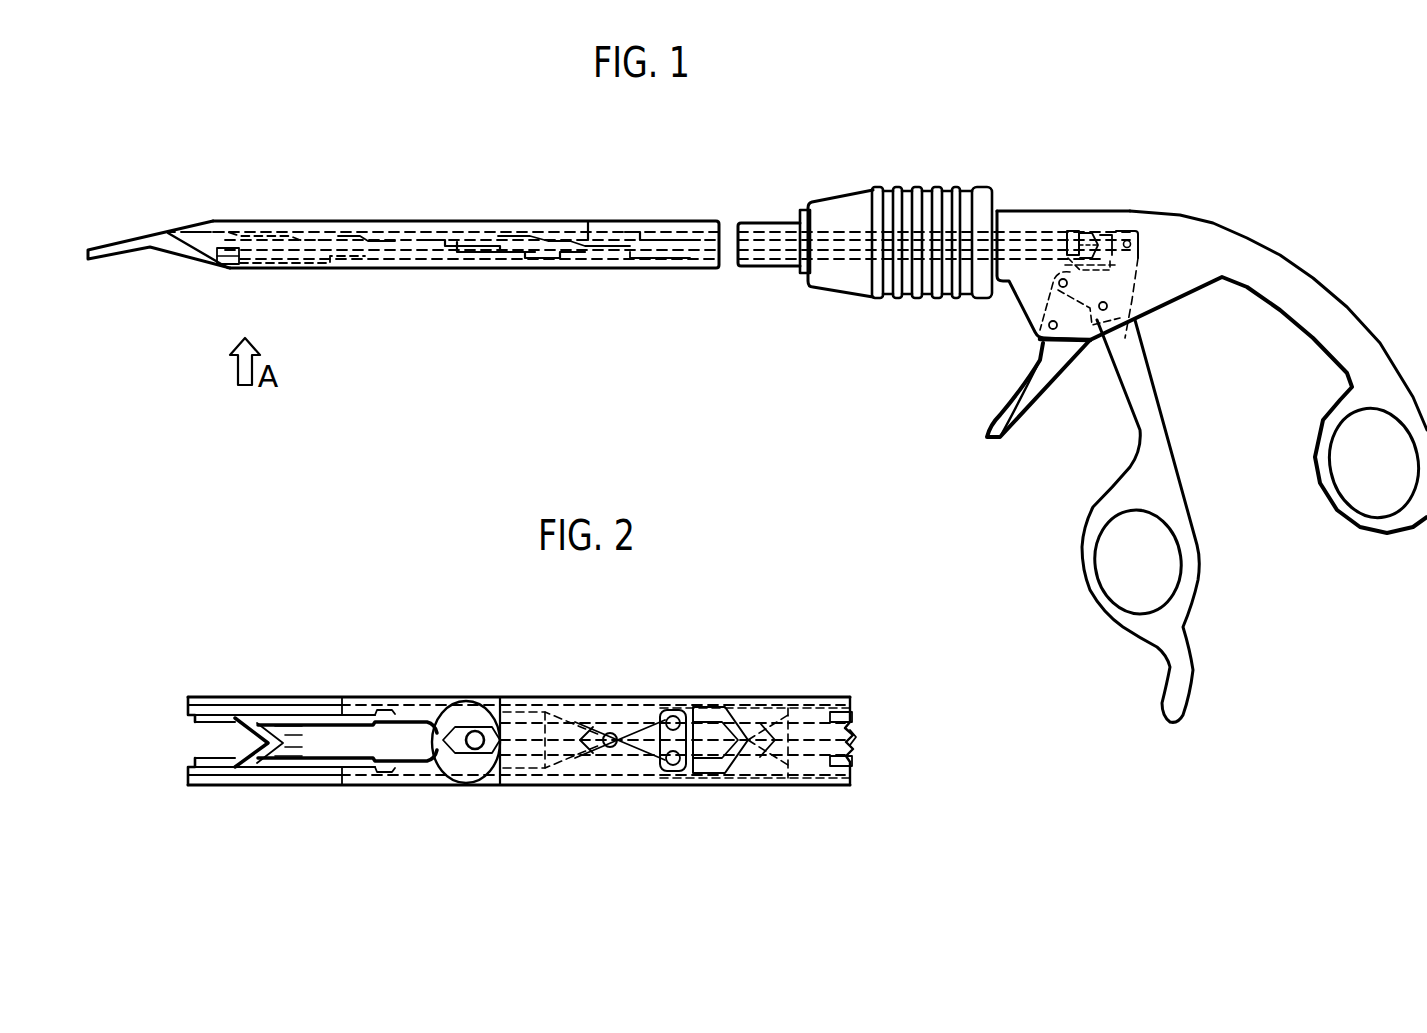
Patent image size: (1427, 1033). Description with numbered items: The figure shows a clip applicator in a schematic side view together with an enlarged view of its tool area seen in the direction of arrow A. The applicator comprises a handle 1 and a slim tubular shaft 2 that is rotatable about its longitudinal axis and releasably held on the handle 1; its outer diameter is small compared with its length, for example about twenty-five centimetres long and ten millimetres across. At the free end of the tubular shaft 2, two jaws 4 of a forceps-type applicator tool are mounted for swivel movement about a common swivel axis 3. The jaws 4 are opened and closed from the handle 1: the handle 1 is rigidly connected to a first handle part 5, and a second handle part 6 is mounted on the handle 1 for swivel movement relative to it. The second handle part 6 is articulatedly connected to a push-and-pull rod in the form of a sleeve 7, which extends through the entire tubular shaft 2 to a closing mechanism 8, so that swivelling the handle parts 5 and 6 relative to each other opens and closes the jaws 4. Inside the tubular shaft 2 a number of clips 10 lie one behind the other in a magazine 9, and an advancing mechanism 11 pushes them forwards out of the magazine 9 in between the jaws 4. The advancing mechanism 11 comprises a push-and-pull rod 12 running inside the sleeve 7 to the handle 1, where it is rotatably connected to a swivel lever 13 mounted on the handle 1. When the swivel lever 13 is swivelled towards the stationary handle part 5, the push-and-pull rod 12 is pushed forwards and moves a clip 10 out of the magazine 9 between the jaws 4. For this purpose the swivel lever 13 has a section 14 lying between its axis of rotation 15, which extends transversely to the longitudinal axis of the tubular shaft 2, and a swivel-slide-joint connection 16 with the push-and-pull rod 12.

In FIG. 1, the handle 1 is at (1210, 205).
In FIG. 1, the tubular shaft 2 is at (634, 216).
In FIG. 2, the tubular shaft 2 is at (568, 787).
In FIG. 1, the swivel axis 3 is at (232, 270).
In FIG. 1, the jaws 4 is at (158, 240).
In FIG. 2, the jaws 4 is at (313, 778).
In FIG. 1, the first handle part 5 is at (1357, 332).
In FIG. 1, the second handle part 6 is at (1168, 483).
In FIG. 1, the sleeve 7 is at (1010, 207).
In FIG. 2, the sleeve 7 is at (787, 787).
In FIG. 1, the closing mechanism 8 is at (340, 277).
In FIG. 1, the magazine 9 is at (519, 222).
In FIG. 1, the clips 10 is at (365, 226).
In FIG. 2, the clips 10 is at (250, 757).
In FIG. 2, the advancing mechanism 11 is at (726, 790).
In FIG. 1, the push-and-pull rod 12 is at (742, 282).
In FIG. 2, the push-and-pull rod 12 is at (858, 760).
In FIG. 1, the swivel lever 13 is at (1017, 405).
In FIG. 1, the section 14 is at (1072, 233).
In FIG. 1, the axis of rotation 15 is at (1035, 328).
In FIG. 1, the swivel-slide-joint connection 16 is at (1120, 212).